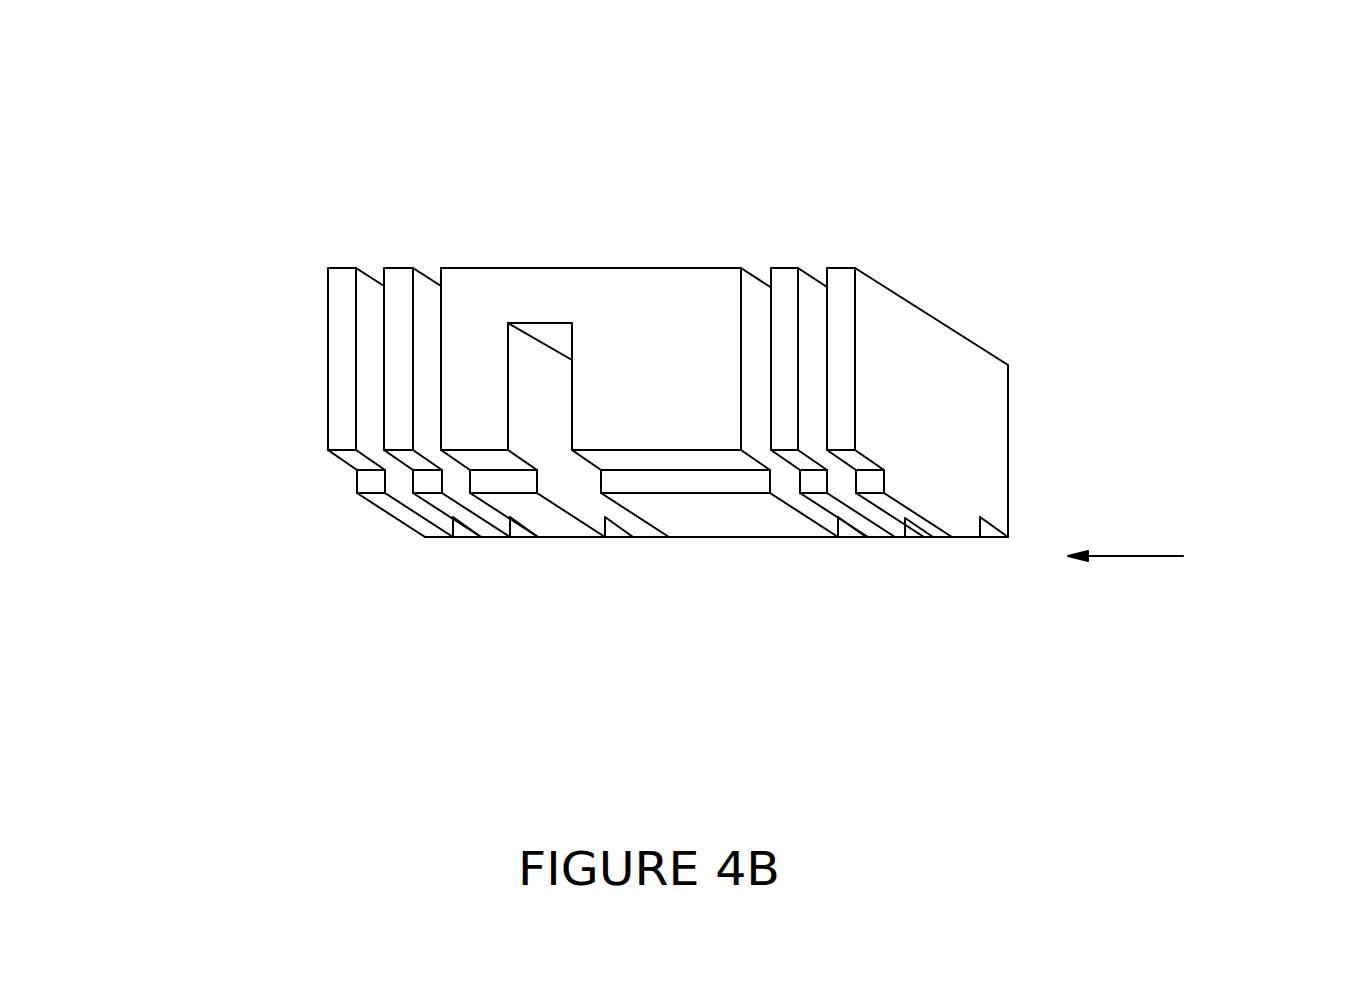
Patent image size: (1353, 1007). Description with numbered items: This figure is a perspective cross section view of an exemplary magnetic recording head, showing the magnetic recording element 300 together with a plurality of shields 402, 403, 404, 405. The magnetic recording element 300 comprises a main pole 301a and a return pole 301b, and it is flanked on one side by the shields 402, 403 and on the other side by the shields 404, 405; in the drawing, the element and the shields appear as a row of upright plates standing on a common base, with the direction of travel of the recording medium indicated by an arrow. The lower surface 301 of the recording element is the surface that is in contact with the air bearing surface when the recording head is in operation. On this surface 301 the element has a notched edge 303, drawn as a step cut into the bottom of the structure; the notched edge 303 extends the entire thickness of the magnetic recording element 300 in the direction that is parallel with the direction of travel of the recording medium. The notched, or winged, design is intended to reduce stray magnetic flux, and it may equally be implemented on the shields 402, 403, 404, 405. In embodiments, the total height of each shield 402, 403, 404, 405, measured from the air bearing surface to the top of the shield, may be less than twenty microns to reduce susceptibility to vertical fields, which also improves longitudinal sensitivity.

The magnetic recording element 300 is at (86, 48).
The surface 301 is at (584, 411).
The main pole 301a is at (480, 345).
The return pole 301b is at (671, 369).
The notched edge 303 is at (357, 479).
The shield 402 is at (357, 268).
The shield 403 is at (414, 268).
The shield 404 is at (780, 268).
The shield 405 is at (837, 268).